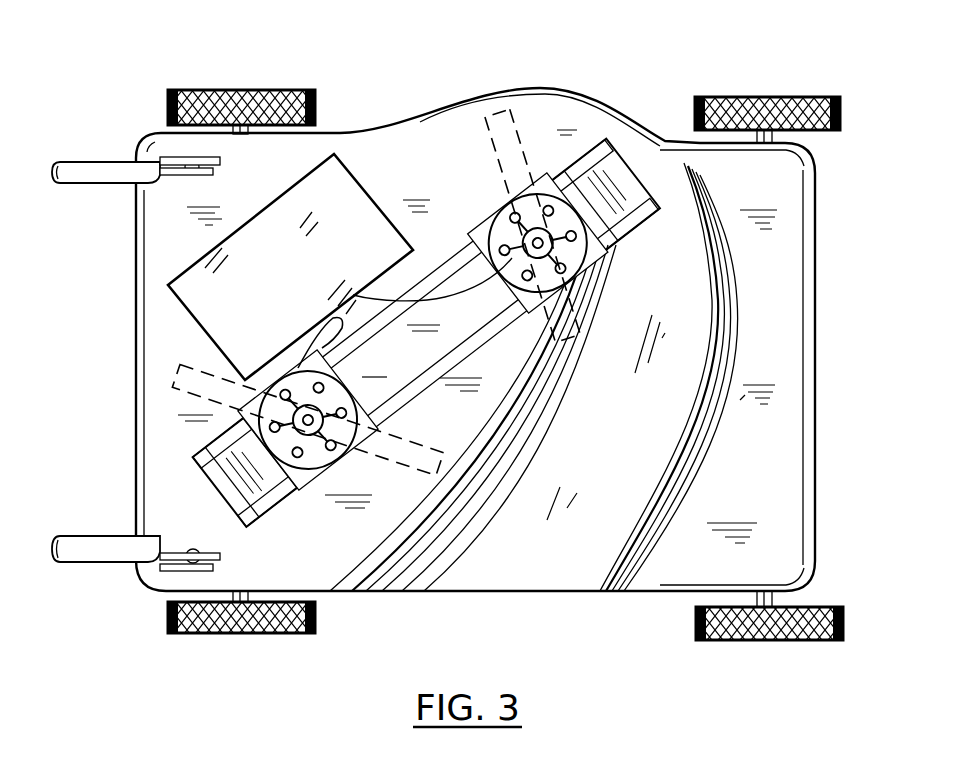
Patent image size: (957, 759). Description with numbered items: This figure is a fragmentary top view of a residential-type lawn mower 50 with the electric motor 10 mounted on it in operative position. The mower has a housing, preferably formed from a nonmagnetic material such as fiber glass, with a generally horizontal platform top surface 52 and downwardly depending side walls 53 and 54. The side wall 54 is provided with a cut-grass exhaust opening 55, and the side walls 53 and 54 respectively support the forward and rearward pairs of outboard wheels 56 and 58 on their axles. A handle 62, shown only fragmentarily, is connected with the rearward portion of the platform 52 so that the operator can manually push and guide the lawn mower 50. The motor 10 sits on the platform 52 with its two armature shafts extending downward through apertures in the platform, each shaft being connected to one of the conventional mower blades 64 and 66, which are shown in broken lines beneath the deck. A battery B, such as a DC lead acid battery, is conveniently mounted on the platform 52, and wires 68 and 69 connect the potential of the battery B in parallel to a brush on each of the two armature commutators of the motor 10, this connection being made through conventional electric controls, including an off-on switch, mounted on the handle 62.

The motor 10 is at (481, 349).
The lawn mower 50 is at (458, 81).
The platform top surface 52 is at (760, 488).
The side wall 53 is at (418, 113).
The side wall 54 is at (336, 592).
The cut-grass exhaust opening 55 is at (613, 592).
The forward pair of outboard wheels 56 is at (714, 97).
The rearward pair of outboard wheels 58 is at (273, 90).
The handle 62 is at (96, 160).
The mower blade 64 is at (500, 181).
The mower blade 66 is at (427, 446).
The wire 68 is at (325, 335).
The wire 69 is at (433, 308).
The battery B is at (290, 262).